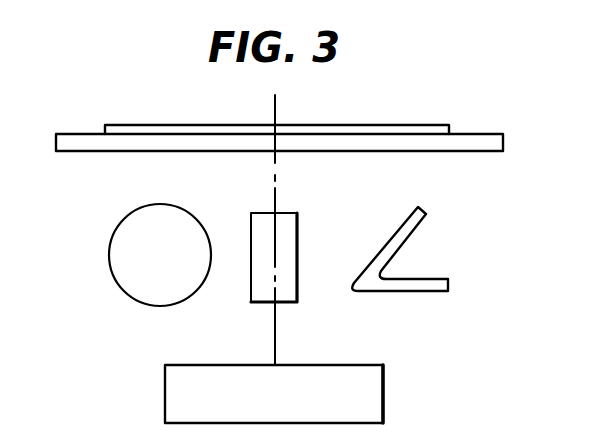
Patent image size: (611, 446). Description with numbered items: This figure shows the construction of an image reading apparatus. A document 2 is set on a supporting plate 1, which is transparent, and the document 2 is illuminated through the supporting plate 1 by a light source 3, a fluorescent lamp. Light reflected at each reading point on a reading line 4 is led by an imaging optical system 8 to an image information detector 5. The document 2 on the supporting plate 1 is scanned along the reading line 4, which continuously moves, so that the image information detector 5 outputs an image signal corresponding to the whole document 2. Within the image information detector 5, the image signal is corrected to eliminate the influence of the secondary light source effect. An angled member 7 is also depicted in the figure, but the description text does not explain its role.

The supporting plate 1 is at (503, 139).
The document 2 is at (388, 124).
The light source 3 is at (133, 300).
The reading line 4 is at (278, 132).
The image information detector 5 is at (384, 390).
The angled reflector 7 is at (449, 287).
The imaging optical system 8 is at (298, 233).